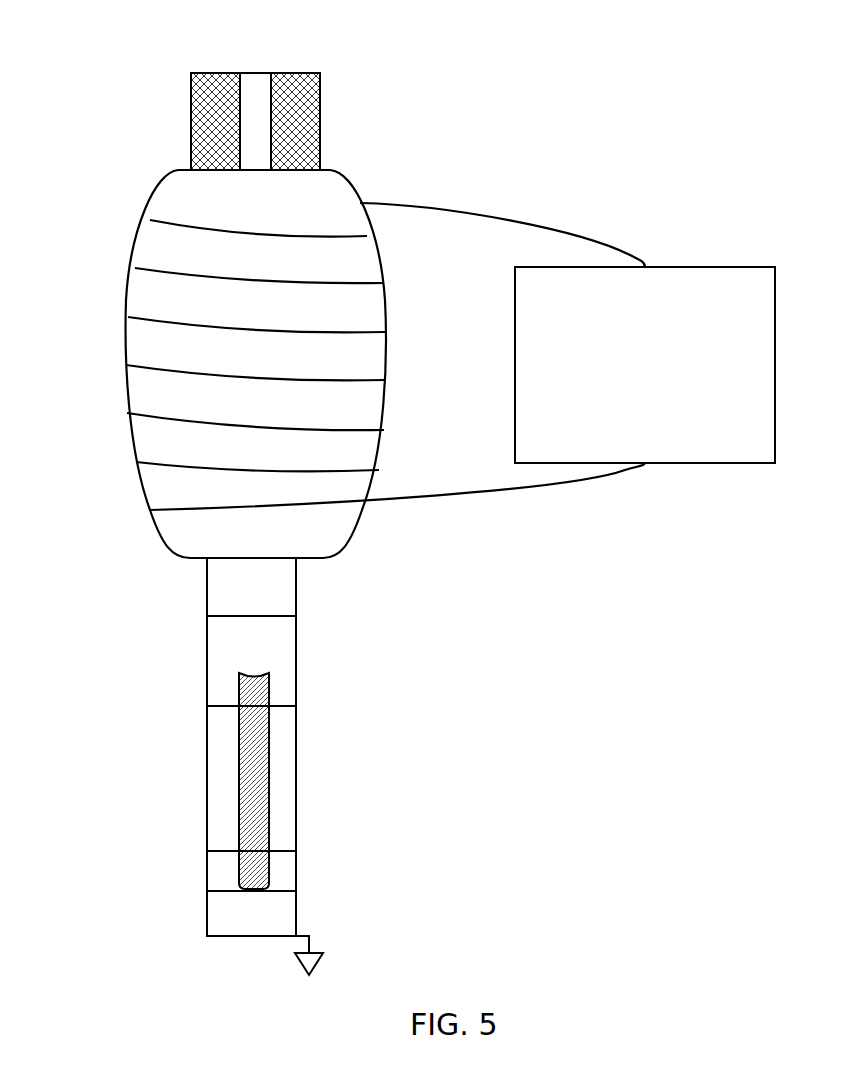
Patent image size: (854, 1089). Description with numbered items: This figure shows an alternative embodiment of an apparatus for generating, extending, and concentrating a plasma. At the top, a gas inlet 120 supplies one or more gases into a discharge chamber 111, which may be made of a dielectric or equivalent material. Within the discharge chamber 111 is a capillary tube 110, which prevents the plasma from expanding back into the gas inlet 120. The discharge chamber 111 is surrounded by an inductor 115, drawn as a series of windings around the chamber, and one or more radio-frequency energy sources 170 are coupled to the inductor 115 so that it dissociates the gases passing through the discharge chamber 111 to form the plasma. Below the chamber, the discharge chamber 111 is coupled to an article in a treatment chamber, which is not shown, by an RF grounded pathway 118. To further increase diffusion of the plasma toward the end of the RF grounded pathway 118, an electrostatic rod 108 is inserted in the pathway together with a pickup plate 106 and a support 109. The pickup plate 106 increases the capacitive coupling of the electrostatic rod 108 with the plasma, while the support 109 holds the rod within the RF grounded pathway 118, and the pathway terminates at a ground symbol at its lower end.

The capillary tube 110 is at (255, 73).
The gas inlet 120 is at (320, 121).
The discharge chamber 111 is at (263, 309).
The inductor 115 is at (272, 283).
The radio-frequency energy source 170 is at (462, 356).
The RF grounded pathway 118 is at (255, 575).
The pickup plate 106 is at (255, 658).
The electrostatic rod 108 is at (257, 783).
The support 109 is at (280, 867).